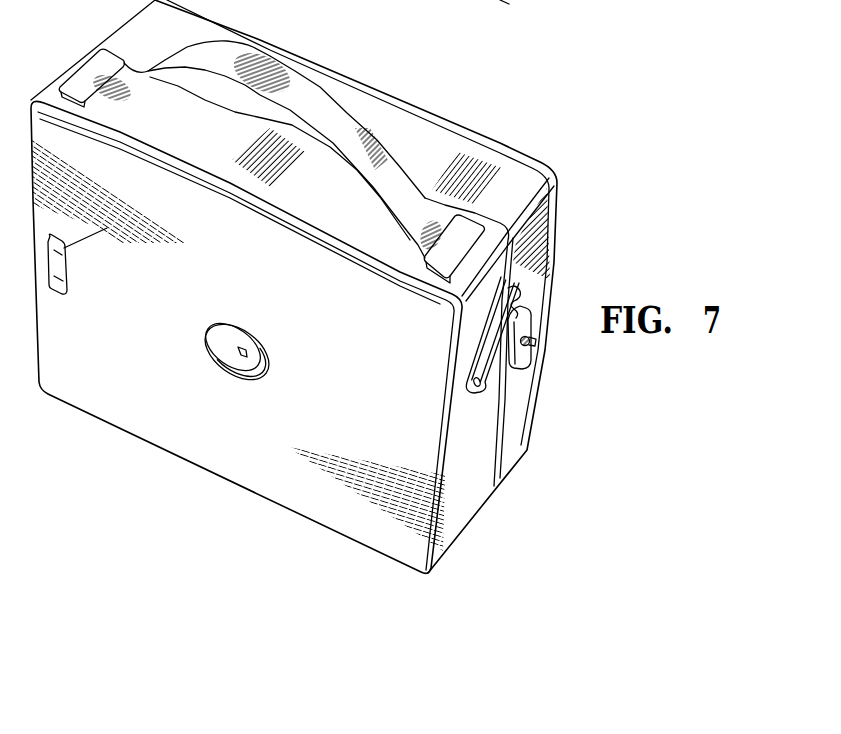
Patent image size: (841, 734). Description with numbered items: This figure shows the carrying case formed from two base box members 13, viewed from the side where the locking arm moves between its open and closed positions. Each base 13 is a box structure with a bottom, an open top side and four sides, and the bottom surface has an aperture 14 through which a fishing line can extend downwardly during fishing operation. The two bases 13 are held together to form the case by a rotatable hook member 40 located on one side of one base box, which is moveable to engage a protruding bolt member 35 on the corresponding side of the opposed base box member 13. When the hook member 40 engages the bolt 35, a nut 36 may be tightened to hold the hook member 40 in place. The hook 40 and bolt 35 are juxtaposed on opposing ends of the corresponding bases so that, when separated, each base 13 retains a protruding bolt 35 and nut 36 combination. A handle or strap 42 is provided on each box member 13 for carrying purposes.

The base 13 is at (380, 508).
The aperture 14 is at (236, 366).
The handle or strap 42 is at (315, 112).
The rotatable hook member 40 is at (510, 278).
The nut 36 is at (532, 312).
The protruding bolt member 35 is at (530, 342).